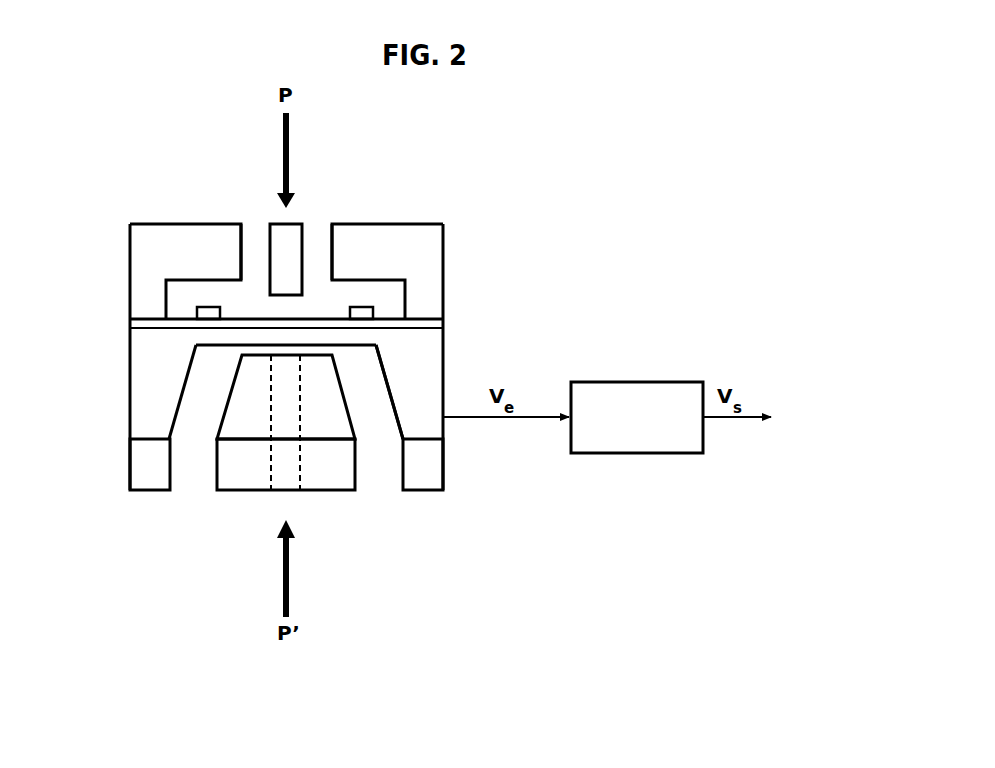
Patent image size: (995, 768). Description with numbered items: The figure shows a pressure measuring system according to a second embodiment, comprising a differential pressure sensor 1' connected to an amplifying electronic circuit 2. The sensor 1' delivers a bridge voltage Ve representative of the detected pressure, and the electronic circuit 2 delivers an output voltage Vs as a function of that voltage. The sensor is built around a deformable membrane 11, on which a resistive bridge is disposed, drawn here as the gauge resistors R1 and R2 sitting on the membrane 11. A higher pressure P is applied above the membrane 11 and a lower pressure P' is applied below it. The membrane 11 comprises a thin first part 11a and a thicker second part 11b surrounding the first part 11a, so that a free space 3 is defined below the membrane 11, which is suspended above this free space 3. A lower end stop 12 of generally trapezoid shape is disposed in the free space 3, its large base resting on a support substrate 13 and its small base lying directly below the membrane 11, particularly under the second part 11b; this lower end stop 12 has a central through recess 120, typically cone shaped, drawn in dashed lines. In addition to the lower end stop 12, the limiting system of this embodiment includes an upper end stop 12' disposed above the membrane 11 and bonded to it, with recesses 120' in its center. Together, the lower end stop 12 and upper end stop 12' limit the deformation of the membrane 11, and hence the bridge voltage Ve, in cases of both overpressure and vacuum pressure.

The pressure sensor 1' is at (311, 314).
The upper end stop 12' is at (345, 217).
The recesses 120' is at (292, 209).
The resistor of resistive bridge R1 is at (210, 313).
The resistor of resistive bridge R2 is at (362, 315).
The deformable membrane 11 is at (283, 411).
The first part of membrane 11a is at (347, 337).
The second part of membrane 11b is at (148, 397).
The support substrate 13 is at (148, 464).
The lower end stop 12 is at (271, 422).
The central through recess 120 is at (254, 445).
The free space 3 is at (372, 420).
The amplifying electronic circuit 2 is at (639, 362).